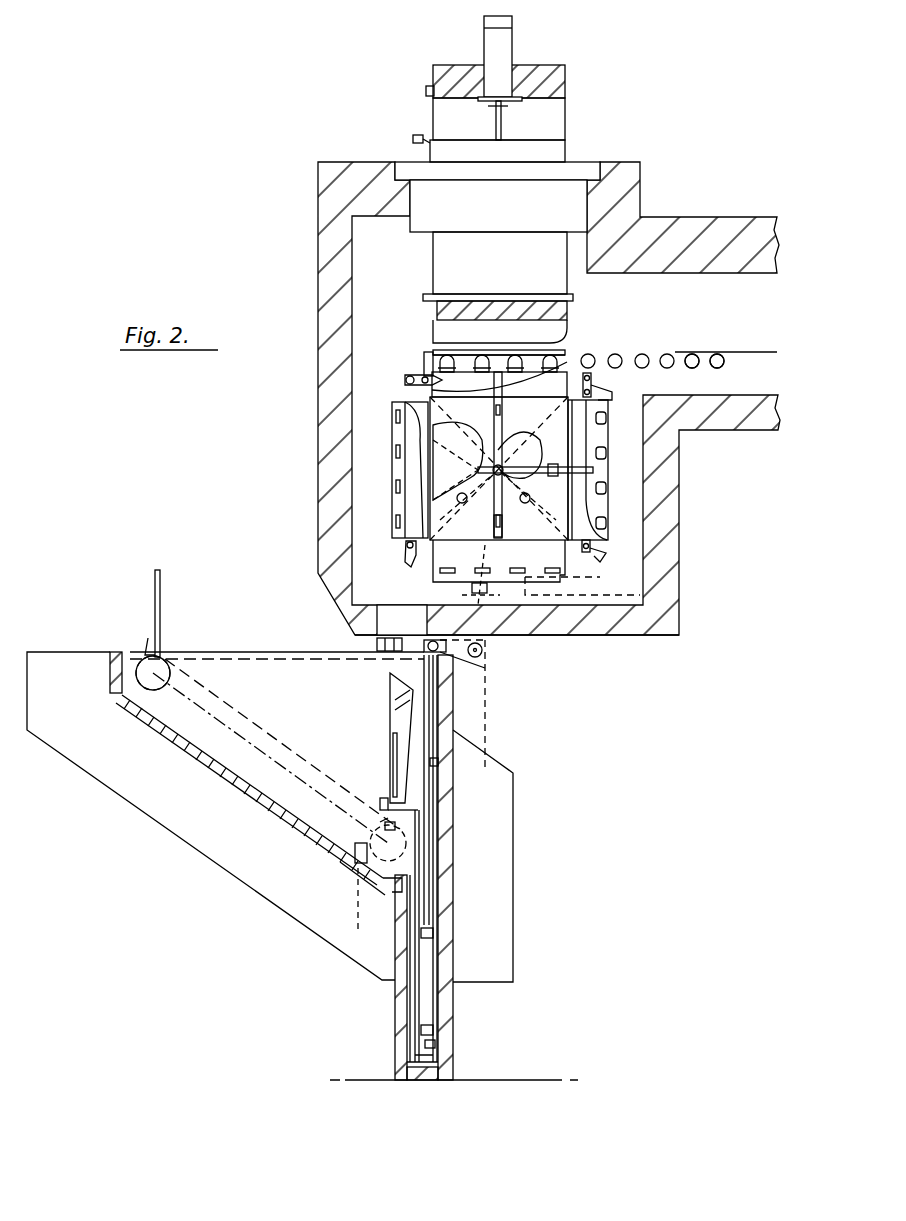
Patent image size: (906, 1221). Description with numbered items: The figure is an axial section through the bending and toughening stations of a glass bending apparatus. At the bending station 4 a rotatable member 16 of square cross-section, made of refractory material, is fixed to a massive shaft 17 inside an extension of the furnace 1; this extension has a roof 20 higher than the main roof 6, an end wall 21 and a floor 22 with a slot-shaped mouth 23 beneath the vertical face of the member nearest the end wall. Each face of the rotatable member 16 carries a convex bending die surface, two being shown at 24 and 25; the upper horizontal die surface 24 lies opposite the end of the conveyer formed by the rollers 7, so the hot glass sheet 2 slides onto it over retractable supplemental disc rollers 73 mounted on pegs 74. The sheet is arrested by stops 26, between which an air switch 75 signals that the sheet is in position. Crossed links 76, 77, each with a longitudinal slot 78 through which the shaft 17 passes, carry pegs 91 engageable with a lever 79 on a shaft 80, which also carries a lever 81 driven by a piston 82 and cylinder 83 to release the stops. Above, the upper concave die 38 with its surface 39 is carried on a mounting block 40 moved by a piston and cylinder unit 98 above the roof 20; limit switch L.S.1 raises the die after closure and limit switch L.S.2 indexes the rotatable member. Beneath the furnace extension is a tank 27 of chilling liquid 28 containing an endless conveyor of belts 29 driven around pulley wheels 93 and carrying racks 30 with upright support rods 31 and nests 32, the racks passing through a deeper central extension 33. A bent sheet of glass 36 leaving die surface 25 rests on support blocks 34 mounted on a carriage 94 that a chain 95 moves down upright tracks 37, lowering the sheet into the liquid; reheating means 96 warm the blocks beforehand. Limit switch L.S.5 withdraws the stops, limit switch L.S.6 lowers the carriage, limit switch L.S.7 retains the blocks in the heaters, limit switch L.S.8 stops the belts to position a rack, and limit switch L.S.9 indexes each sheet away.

The furnace 1 is at (690, 210).
The glass sheet 2 is at (555, 357).
The bending station 4 is at (355, 132).
The main roof 6 is at (746, 222).
The rollers 7 is at (694, 364).
The rotatable member 16 is at (592, 460).
The shaft 17 is at (462, 470).
The roof 20 is at (610, 175).
The end wall 21 is at (318, 333).
The floor 22 is at (590, 628).
The mouth 23 is at (385, 620).
The die surface 24 is at (568, 364).
The die surface 25 is at (396, 432).
The stops 26 is at (424, 359).
The tank 27 is at (225, 770).
The chilling liquid 28 is at (273, 662).
The belts 29 is at (242, 722).
The racks 30 is at (165, 655).
The support rods 31 is at (155, 585).
The nests 32 is at (146, 640).
The central extension 33 is at (75, 656).
The support blocks 34 is at (382, 803).
The bent sheet of glass 36 is at (392, 690).
The tracks 37 is at (432, 790).
The upper concave die 38 is at (432, 310).
The surface 39 is at (553, 328).
The mounting block 40 is at (445, 247).
The supplemental disc rollers 73 is at (604, 528).
The peg 74 is at (499, 372).
The air switch 75 is at (428, 348).
The link 76 is at (425, 395).
The link 77 is at (592, 380).
The longitudinal slot 78 is at (499, 380).
The lever 79 is at (483, 569).
The shaft 80 is at (513, 528).
The lever 81 is at (469, 578).
The piston 82 is at (535, 640).
The cylinder 83 is at (598, 592).
The pegs 91 is at (397, 446).
The pulley wheels 93 is at (150, 686).
The carriage 94 is at (425, 1000).
The chain 95 is at (487, 690).
The reheating means 96 is at (377, 645).
The piston and cylinder unit 98 is at (490, 40).
The limit switch LS1 L.S.1 is at (413, 139).
The limit switch LS2 L.S.2 is at (426, 91).
The limit switch LS5 L.S.5 is at (488, 662).
The limit switch LS6 L.S.6 is at (504, 651).
The limit switch LS7 L.S.7 is at (440, 765).
The limit switch LS8 L.S.8 is at (385, 826).
The limit switch LS9 L.S.9 is at (440, 1048).